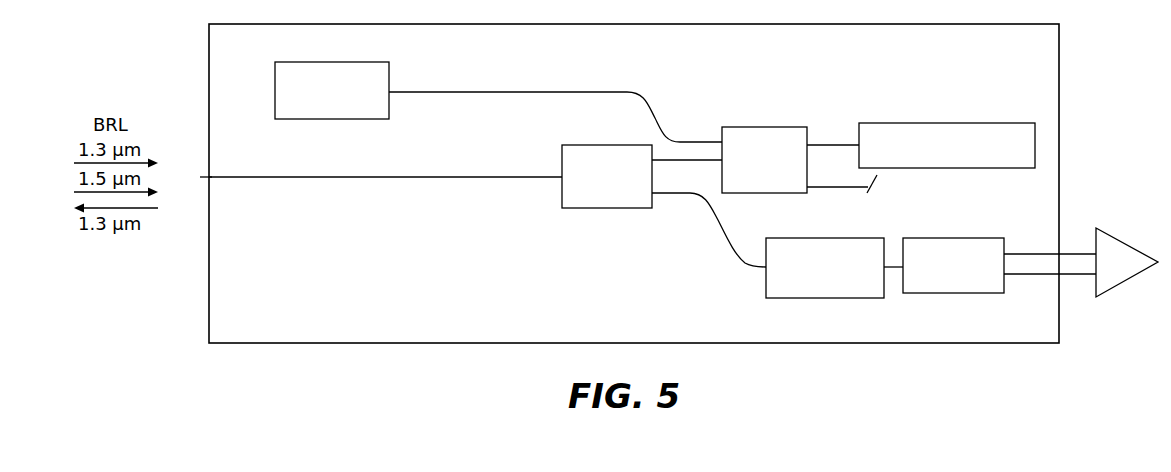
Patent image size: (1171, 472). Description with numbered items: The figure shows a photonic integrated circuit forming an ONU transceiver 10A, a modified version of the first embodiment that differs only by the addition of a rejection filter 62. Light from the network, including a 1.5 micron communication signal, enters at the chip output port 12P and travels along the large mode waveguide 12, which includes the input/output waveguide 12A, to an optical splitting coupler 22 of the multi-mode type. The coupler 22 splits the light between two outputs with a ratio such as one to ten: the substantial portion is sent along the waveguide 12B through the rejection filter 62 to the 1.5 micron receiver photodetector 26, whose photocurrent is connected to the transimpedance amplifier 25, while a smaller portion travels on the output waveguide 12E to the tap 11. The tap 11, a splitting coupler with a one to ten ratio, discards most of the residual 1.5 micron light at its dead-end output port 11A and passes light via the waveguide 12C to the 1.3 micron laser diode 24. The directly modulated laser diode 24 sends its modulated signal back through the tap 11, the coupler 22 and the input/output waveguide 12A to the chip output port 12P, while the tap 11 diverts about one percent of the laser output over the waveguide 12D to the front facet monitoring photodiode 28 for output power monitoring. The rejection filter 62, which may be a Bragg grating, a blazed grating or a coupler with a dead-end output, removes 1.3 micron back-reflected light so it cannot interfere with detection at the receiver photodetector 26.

The ONU transceiver 10A is at (634, 183).
The chip output port 12P is at (206, 177).
The input/output waveguide 12A is at (275, 180).
The large mode waveguide 12 is at (393, 180).
The front facet monitoring photodiode 28 is at (330, 76).
The waveguide 12D is at (530, 90).
The optical splitting coupler 22 is at (578, 153).
The output waveguide 12E is at (662, 162).
The tap 11 is at (757, 125).
The waveguide 12C is at (824, 145).
The laser diode 24 is at (940, 120).
The output port of tap 11A is at (838, 187).
The rejection filter 62 is at (823, 237).
The waveguide 12B is at (725, 233).
The receiver photodetector 26 is at (918, 238).
The transimpedance amplifier 25 is at (1110, 242).